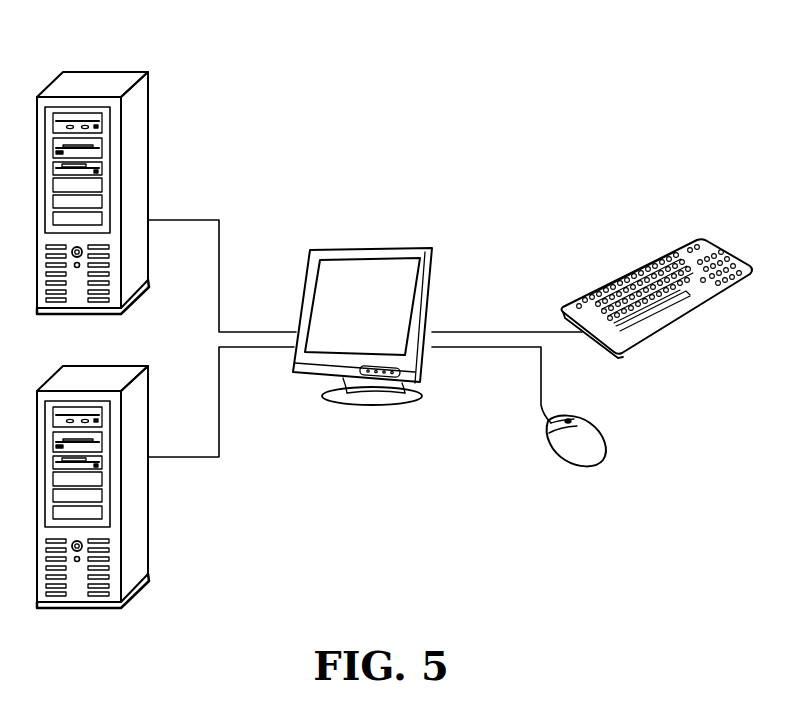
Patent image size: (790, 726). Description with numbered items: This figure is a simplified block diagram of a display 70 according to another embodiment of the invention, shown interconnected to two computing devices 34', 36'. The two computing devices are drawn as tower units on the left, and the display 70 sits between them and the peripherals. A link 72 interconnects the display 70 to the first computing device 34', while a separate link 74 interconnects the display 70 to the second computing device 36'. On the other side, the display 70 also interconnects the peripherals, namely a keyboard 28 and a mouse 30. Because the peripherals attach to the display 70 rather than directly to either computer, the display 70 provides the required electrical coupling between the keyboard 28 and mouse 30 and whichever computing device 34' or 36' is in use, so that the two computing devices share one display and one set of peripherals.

The computing device 34' is at (93, 170).
The computing device 36' is at (93, 465).
The link 72 is at (192, 220).
The link 74 is at (190, 458).
The display 70 is at (366, 278).
The keyboard 28 is at (648, 263).
The mouse 30 is at (588, 433).